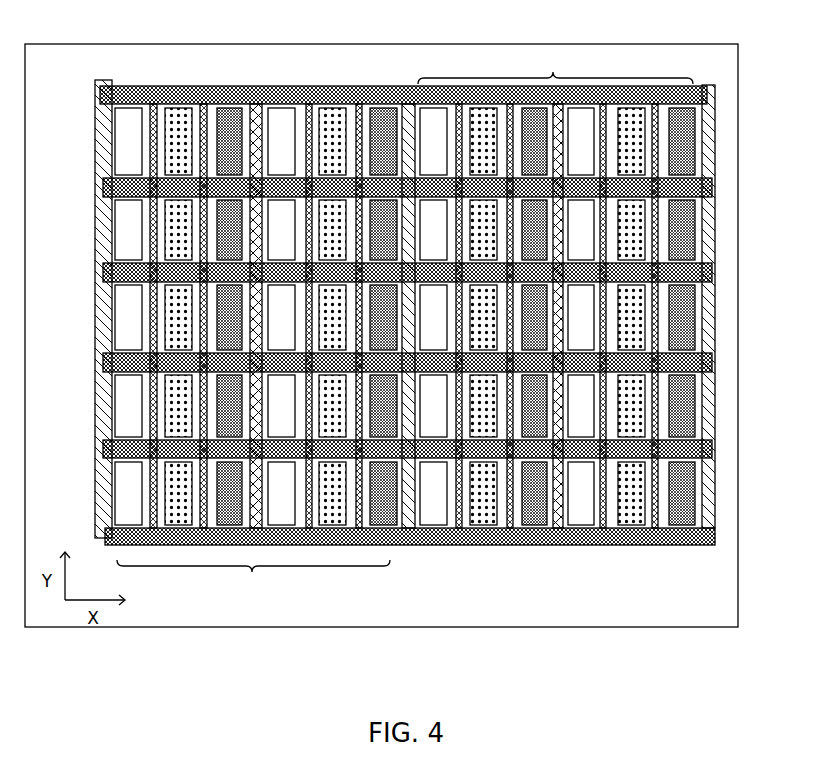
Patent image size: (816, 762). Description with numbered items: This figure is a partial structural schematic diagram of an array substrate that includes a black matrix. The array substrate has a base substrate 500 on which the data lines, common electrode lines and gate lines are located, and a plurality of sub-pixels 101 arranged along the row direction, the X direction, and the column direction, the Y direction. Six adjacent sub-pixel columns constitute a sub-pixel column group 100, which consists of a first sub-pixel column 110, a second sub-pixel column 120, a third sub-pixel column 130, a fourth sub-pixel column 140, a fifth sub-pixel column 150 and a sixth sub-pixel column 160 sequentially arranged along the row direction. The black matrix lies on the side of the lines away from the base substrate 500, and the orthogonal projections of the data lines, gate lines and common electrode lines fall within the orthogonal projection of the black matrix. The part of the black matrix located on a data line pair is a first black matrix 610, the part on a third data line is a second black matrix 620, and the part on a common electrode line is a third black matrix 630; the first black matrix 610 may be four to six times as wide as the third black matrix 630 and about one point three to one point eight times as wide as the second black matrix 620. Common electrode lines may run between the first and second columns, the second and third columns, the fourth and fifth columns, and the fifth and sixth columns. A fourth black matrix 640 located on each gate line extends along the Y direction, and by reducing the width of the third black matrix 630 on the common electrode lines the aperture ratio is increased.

The sub-pixel column group 100 is at (405, 326).
The sub-pixel 101 is at (125, 233).
The first sub-pixel column 110 is at (103, 289).
The second sub-pixel column 120 is at (156, 289).
The third sub-pixel column 130 is at (208, 289).
The fourth sub-pixel column 140 is at (262, 289).
The fifth sub-pixel column 150 is at (350, 291).
The sixth sub-pixel column 160 is at (416, 289).
The base substrate 500 is at (404, 323).
The first black matrix 610 is at (444, 343).
The second black matrix 620 is at (527, 343).
The third black matrix 630 is at (623, 343).
The fourth black matrix 640 is at (407, 350).